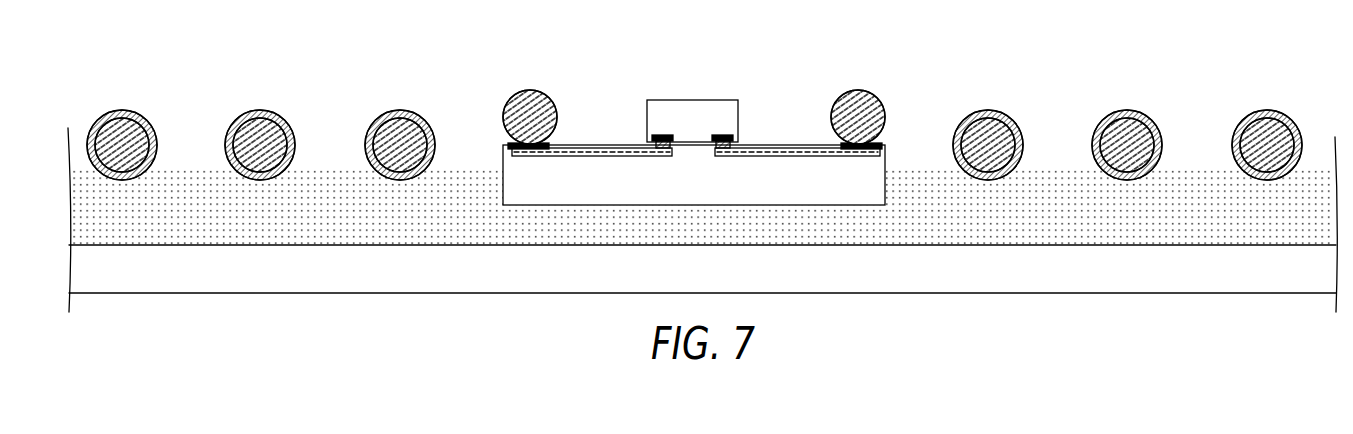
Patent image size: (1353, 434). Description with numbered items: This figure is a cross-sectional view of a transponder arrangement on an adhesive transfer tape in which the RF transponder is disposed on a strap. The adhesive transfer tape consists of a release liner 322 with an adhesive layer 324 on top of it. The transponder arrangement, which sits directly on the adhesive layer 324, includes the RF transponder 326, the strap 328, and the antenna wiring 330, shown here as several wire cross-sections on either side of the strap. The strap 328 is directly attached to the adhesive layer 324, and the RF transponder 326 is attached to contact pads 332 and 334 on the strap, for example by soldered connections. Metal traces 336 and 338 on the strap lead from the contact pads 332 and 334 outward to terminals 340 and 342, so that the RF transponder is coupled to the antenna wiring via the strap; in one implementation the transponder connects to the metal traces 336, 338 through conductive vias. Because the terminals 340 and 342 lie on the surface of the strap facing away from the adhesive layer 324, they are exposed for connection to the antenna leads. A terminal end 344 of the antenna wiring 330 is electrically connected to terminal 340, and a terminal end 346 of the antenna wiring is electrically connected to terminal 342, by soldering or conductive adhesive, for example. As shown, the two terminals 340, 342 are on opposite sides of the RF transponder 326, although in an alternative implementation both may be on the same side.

The release liner 322 is at (683, 284).
The adhesive layer 324 is at (926, 221).
The RF transponder 326 is at (676, 127).
The strap 328 is at (674, 188).
The antenna wiring 330 is at (433, 108).
The contact pad 332 is at (654, 143).
The contact pad 334 is at (734, 142).
The metal trace 336 is at (630, 157).
The metal trace 338 is at (761, 157).
The terminal 340 is at (508, 146).
The terminal 342 is at (884, 147).
The terminal end 344 is at (531, 90).
The terminal end 346 is at (859, 90).